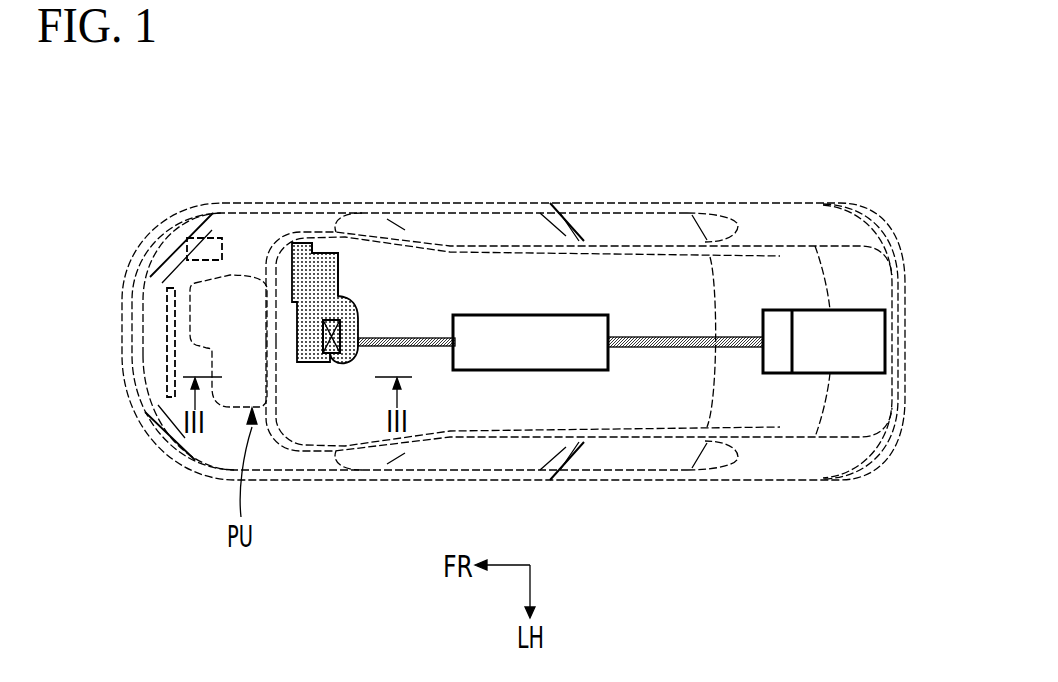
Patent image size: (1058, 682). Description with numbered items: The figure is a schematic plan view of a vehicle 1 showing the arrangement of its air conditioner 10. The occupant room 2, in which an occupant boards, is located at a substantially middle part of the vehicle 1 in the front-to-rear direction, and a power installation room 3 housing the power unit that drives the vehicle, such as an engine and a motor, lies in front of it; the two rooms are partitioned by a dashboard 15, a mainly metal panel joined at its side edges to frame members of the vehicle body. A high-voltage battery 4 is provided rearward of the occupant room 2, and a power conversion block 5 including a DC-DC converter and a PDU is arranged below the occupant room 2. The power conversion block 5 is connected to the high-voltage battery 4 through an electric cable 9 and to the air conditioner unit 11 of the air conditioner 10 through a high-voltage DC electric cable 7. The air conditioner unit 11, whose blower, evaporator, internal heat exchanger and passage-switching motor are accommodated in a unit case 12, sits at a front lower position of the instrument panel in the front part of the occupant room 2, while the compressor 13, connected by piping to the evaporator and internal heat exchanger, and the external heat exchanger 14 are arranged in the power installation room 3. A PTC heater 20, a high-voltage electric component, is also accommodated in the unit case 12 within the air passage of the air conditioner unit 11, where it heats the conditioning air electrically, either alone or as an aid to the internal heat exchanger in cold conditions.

The vehicle 1 is at (592, 158).
The occupant room 2 is at (415, 263).
The power installation room 3 is at (250, 222).
The high-voltage battery 4 is at (860, 343).
The power conversion block 5 is at (592, 350).
The high-voltage DC electric cable 7 is at (423, 348).
The electric cable 9 is at (665, 349).
The air conditioner 10 is at (315, 269).
The air conditioner unit 11 is at (341, 277).
The unit case 12 is at (323, 242).
The compressor 13 is at (208, 237).
The external heat exchanger 14 is at (167, 327).
The dashboard 15 is at (280, 437).
The PTC heater 20 is at (327, 338).